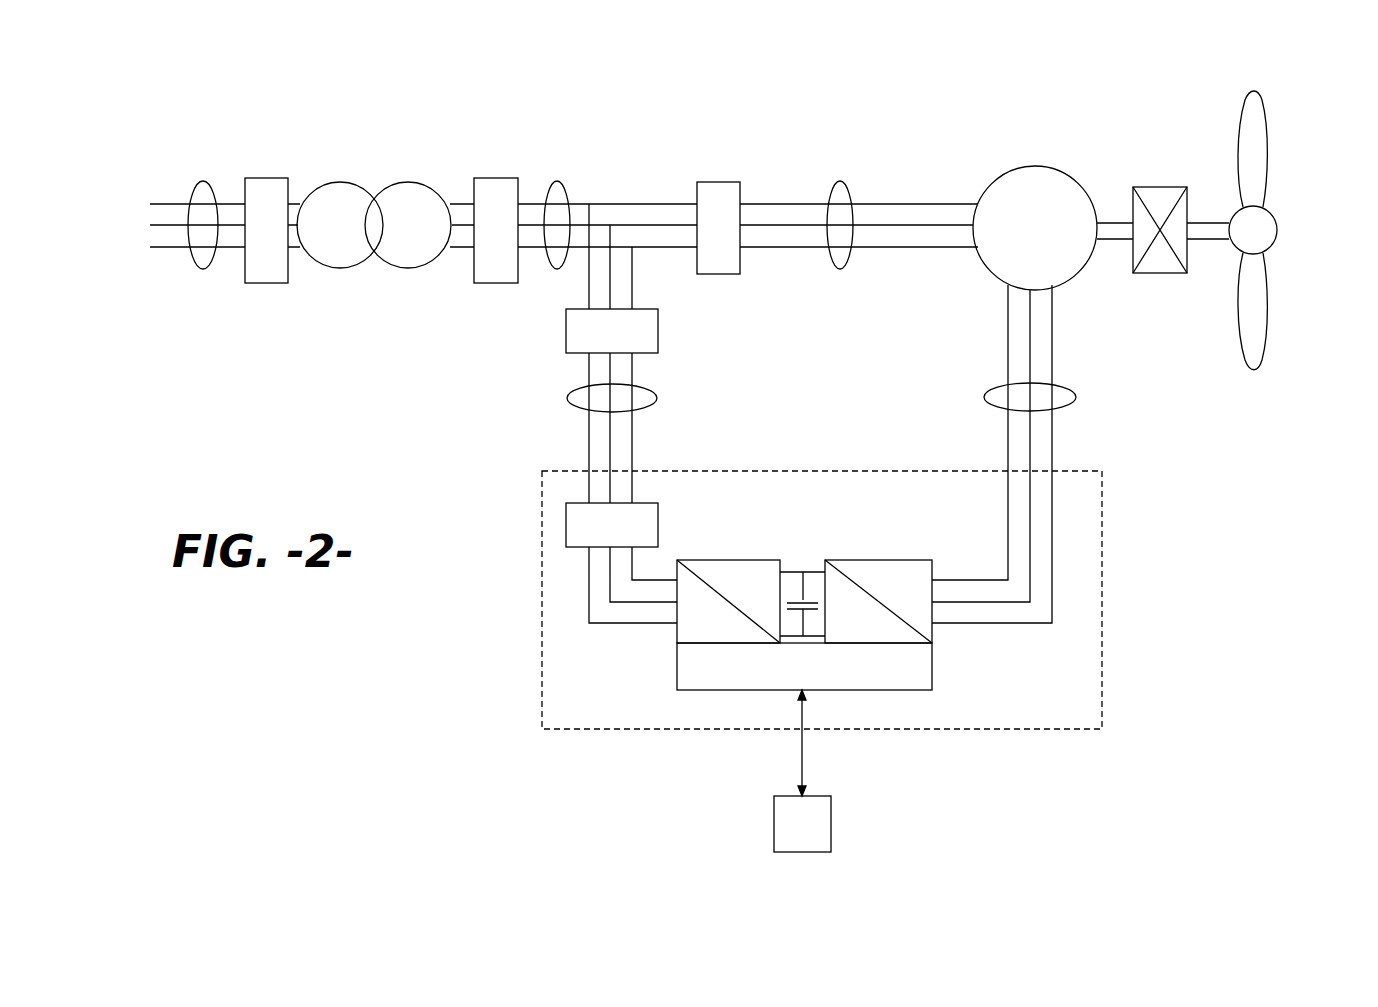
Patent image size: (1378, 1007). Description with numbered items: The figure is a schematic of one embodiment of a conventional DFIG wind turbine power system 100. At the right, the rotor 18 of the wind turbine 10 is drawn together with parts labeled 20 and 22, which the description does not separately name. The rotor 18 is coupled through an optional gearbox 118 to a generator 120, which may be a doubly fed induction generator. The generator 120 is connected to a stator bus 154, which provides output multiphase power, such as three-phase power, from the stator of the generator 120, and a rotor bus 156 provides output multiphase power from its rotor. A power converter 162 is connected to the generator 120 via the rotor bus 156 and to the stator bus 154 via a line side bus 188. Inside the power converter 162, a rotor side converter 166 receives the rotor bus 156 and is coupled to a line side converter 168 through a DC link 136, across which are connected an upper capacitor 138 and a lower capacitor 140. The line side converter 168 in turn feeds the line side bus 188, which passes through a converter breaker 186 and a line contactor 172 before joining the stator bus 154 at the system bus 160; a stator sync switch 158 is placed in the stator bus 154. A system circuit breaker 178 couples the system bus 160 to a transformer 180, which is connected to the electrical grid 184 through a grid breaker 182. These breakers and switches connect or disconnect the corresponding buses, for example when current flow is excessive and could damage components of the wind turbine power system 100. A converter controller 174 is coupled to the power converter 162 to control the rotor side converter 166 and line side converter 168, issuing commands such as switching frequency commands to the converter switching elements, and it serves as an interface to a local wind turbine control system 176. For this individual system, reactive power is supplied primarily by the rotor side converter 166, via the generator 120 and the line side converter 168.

The wind turbine 10 is at (1292, 96).
The rotor 18 is at (1289, 241).
The rotatable hub 20 is at (1278, 228).
The rotor blades 22 is at (1262, 160).
The wind turbine power system 100 is at (452, 660).
The gearbox 118 is at (1158, 187).
The generator 120 is at (1034, 167).
The DC link 136 is at (810, 573).
The upper capacitor 138 is at (790, 572).
The lower capacitor 140 is at (792, 600).
The stator bus 154 is at (843, 183).
The rotor bus 156 is at (1076, 394).
The stator sync switch 158 is at (718, 182).
The system bus 160 is at (557, 182).
The power converter 162 is at (1102, 604).
The rotor side converter 166 is at (932, 643).
The line side converter 168 is at (677, 643).
The line contactor 172 is at (566, 528).
The converter controller 174 is at (718, 692).
The local wind turbine control system 176 is at (831, 826).
The system circuit breaker 178 is at (495, 178).
The transformer 180 is at (405, 184).
The grid breaker 182 is at (268, 178).
The electrical grid 184 is at (206, 178).
The converter breaker 186 is at (566, 334).
The line side bus 188 is at (568, 398).